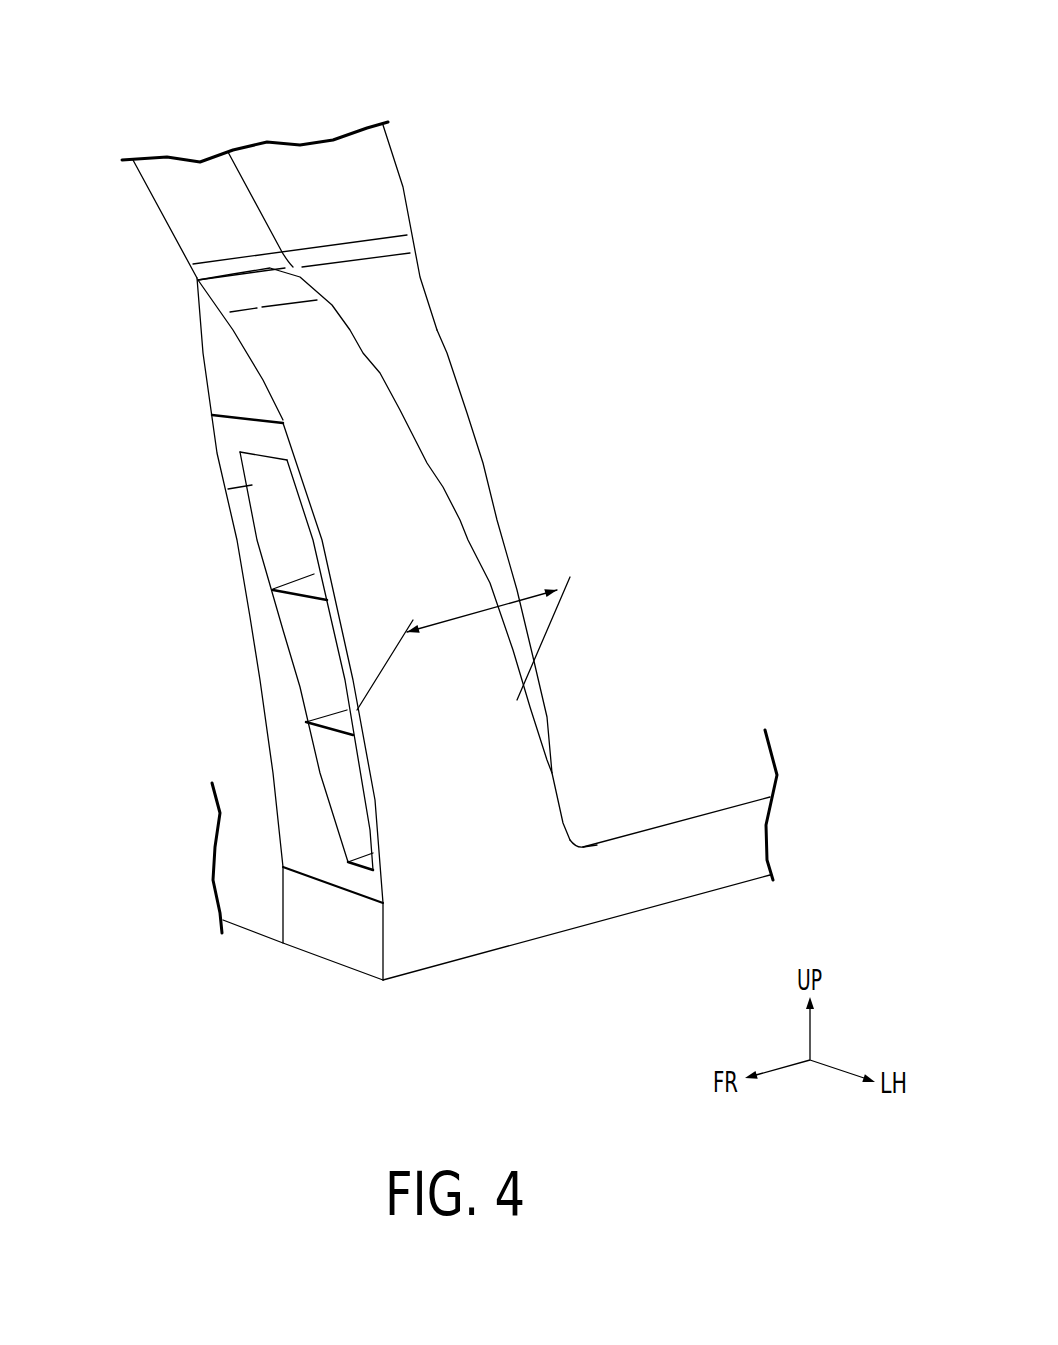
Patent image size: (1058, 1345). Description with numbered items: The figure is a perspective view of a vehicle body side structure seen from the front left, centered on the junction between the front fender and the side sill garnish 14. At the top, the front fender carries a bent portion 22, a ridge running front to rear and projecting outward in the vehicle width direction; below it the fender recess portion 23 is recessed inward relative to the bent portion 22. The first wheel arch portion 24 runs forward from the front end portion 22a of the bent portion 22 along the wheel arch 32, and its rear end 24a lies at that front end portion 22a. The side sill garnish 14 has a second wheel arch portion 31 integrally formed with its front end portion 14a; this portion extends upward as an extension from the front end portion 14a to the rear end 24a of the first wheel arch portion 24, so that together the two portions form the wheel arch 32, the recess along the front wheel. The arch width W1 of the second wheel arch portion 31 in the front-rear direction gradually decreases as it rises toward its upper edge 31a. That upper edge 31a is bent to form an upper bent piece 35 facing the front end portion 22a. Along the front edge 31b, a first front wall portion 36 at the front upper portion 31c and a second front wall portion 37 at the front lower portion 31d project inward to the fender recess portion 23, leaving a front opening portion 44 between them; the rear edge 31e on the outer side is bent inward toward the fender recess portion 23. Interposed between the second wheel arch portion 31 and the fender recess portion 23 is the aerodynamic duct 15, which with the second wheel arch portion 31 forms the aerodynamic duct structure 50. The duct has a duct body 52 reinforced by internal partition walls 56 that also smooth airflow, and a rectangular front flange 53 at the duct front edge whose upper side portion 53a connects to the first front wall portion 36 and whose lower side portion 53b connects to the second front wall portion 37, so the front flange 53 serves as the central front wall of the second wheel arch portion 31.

The side sill garnish 14 is at (678, 817).
The front end portion 14a is at (598, 883).
The aerodynamic duct 15 is at (247, 627).
The bent portion 22 is at (345, 240).
The front end portion 22a is at (373, 137).
The fender recess portion 23 is at (443, 393).
The first wheel arch portion 24 is at (235, 182).
The rear end 24a is at (247, 257).
The second wheel arch portion 31 is at (468, 527).
The upper edge 31a is at (233, 287).
The front edge 31b is at (363, 730).
The front upper portion 31c is at (275, 375).
The front lower portion 31d is at (383, 940).
The rear edge 31e is at (517, 700).
The wheel arch 32 is at (313, 503).
The upper bent piece 35 is at (187, 282).
The first front wall portion 36 is at (220, 343).
The second front wall portion 37 is at (327, 918).
The front opening portion 44 is at (240, 417).
The aerodynamic duct structure 50 is at (450, 473).
The duct body 52 is at (310, 680).
The front flange 53 is at (275, 673).
The upper side portion 53a is at (230, 420).
The lower side portion 53b is at (325, 872).
The partition walls 56 is at (305, 583).
The arch width W1 is at (480, 607).